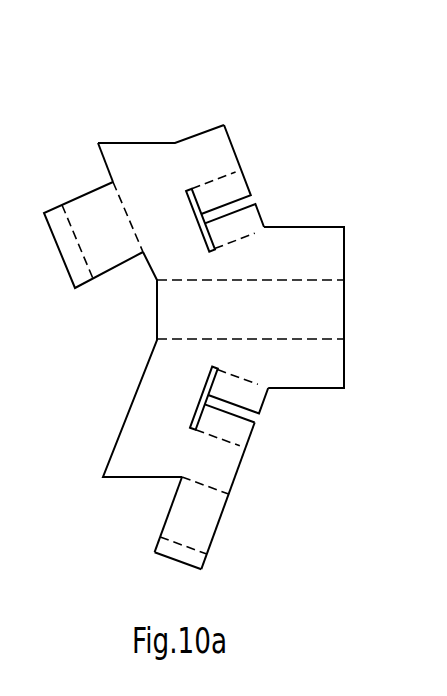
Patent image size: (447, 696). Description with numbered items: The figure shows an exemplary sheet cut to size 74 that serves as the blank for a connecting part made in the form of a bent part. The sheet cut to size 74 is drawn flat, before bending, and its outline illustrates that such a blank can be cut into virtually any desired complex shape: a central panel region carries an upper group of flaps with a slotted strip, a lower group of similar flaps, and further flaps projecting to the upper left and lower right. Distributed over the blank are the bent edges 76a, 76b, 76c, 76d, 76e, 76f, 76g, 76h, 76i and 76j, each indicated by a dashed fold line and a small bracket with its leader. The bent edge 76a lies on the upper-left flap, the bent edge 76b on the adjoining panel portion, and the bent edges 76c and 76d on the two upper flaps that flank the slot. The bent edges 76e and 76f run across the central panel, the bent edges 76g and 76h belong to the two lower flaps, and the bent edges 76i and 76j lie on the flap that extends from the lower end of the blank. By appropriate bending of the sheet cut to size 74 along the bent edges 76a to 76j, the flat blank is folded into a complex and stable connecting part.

The sheet cut to size 74 is at (271, 87).
The bent edge 76a is at (72, 232).
The bent edge 76b is at (125, 207).
The bent edge 76c is at (225, 174).
The bent edge 76d is at (251, 230).
The bent edge 76e is at (318, 280).
The bent edge 76f is at (320, 339).
The bent edge 76g is at (255, 388).
The bent edge 76h is at (227, 446).
The bent edge 76i is at (222, 489).
The bent edge 76j is at (198, 547).